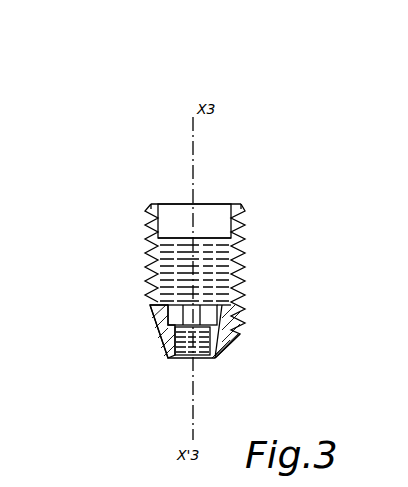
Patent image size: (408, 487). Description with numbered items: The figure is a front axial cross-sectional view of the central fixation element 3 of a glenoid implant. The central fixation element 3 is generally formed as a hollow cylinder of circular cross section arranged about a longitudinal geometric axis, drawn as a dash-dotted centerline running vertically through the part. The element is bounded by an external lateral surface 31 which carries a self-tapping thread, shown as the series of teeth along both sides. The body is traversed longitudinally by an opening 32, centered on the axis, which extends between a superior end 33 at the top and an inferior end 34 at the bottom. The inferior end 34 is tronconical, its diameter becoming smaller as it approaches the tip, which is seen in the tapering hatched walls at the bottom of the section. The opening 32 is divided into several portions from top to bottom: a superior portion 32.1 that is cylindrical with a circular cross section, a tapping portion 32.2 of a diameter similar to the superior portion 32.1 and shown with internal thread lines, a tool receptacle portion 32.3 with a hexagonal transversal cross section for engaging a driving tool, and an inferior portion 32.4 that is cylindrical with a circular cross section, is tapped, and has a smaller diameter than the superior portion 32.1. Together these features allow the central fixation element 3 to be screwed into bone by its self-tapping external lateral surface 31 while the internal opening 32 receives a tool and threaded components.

The central fixation element 3 is at (156, 151).
The external lateral surface 31 is at (252, 257).
The opening 32 is at (207, 214).
The superior portion 32.1 is at (173, 218).
The tapping portion 32.2 is at (165, 262).
The tool receptacle portion 32.3 is at (165, 314).
The inferior portion 32.4 is at (165, 342).
The superior end 33 is at (245, 208).
The inferior end 34 is at (228, 358).